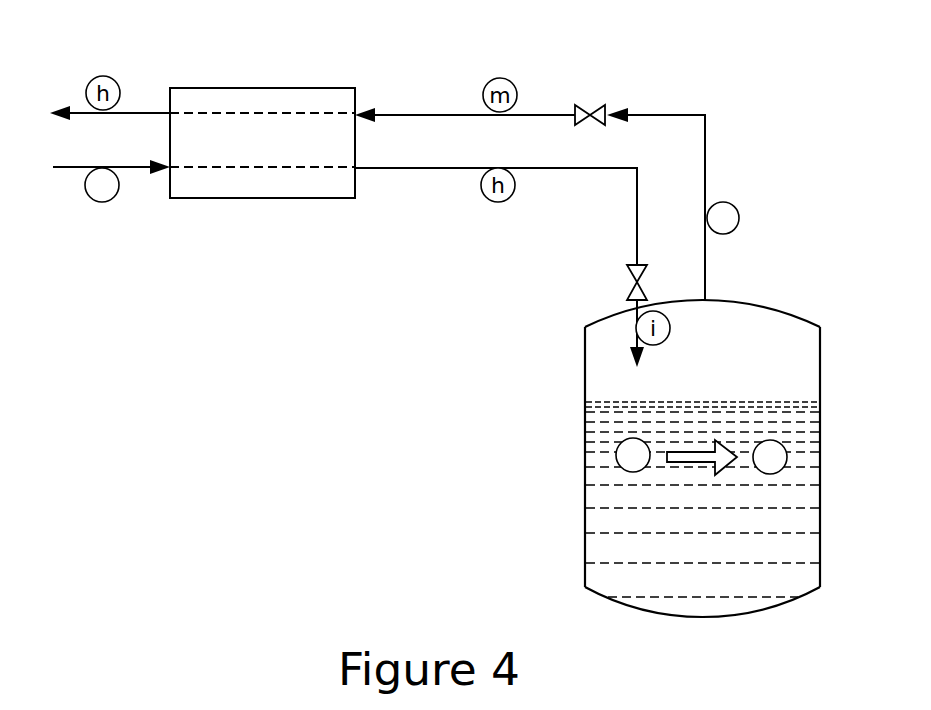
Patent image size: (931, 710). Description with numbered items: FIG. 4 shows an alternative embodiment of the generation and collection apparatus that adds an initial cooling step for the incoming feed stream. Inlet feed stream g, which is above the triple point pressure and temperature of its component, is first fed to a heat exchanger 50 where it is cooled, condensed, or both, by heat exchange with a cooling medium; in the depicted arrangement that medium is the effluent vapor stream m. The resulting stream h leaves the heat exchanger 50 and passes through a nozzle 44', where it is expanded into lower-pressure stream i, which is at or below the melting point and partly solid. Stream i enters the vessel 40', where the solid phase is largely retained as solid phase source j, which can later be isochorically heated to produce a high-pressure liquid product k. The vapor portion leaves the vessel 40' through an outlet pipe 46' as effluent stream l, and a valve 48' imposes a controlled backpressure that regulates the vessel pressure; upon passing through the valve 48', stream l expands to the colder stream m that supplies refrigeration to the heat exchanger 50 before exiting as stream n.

The heat exchanger 50 is at (255, 98).
The valve 48' is at (620, 86).
The outlet pipe 46' is at (690, 204).
The nozzle 44' is at (597, 298).
The vessel 40' is at (706, 438).